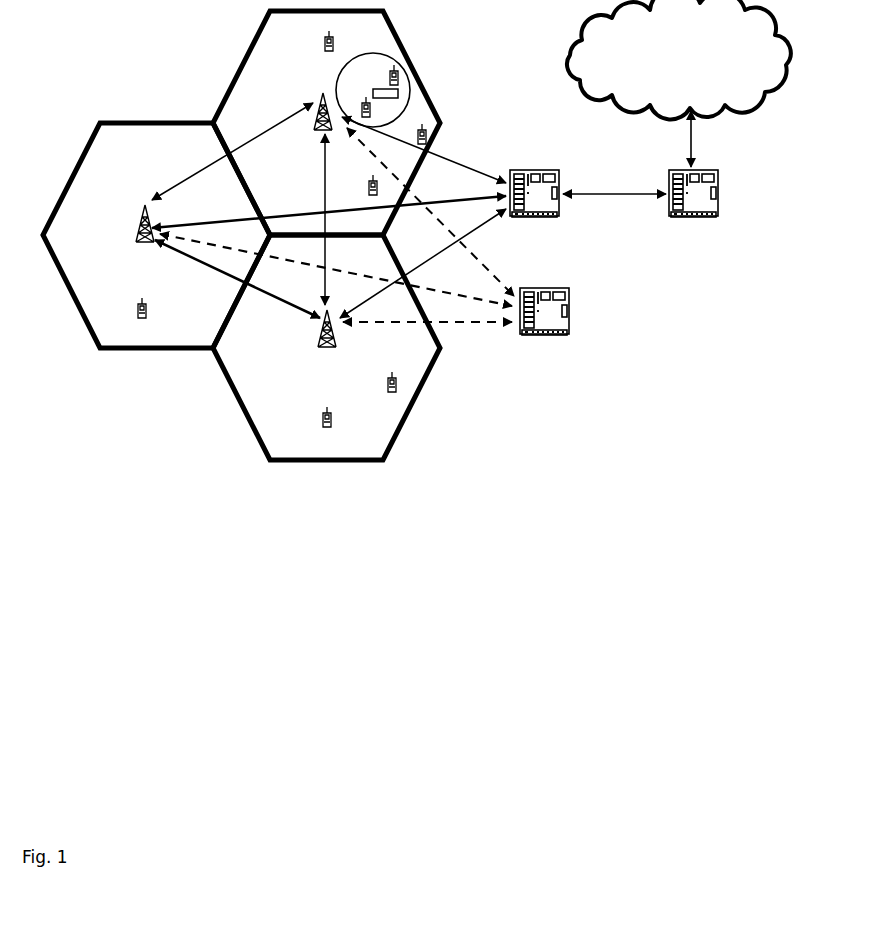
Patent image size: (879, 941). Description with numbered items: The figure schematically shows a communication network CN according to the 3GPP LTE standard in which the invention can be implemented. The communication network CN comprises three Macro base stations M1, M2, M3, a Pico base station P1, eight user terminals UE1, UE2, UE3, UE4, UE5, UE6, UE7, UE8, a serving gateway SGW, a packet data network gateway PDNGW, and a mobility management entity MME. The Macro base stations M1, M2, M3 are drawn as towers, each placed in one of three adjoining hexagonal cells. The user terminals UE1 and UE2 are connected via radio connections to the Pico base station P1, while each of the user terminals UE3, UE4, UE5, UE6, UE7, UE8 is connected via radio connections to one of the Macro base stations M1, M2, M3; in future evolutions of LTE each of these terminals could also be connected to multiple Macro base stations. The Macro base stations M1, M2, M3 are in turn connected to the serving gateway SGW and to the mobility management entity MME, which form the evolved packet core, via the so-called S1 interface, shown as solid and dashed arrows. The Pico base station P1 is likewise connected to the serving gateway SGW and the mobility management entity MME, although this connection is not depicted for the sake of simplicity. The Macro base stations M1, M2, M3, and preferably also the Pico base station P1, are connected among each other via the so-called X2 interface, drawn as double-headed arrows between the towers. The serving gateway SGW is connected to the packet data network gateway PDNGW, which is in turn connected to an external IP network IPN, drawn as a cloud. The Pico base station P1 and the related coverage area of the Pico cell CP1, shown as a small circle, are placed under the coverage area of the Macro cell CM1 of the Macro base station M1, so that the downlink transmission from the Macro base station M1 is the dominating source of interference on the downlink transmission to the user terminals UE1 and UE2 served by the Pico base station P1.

The communication network CN is at (85, 19).
The Macro cell coverage area CM1 is at (242, 48).
The Pico cell CP1 is at (367, 43).
The Macro base station M1 is at (319, 105).
The Macro base station M2 is at (325, 339).
The Macro base station M3 is at (142, 238).
The user terminal UE1 is at (353, 103).
The user terminal UE2 is at (377, 74).
The user terminal UE3 is at (310, 41).
The user terminal UE4 is at (354, 185).
The user terminal UE5 is at (404, 134).
The user terminal UE6 is at (373, 382).
The user terminal UE7 is at (309, 417).
The user terminal UE8 is at (125, 310).
The Pico base station P1 is at (385, 102).
The X2 interface X2 is at (238, 210).
The S1 interface S1 is at (333, 228).
The serving gateway SGW is at (534, 209).
The packet data network gateway PDNGW is at (679, 209).
The mobility management entity MME is at (541, 329).
The external IP network IPN is at (679, 59).